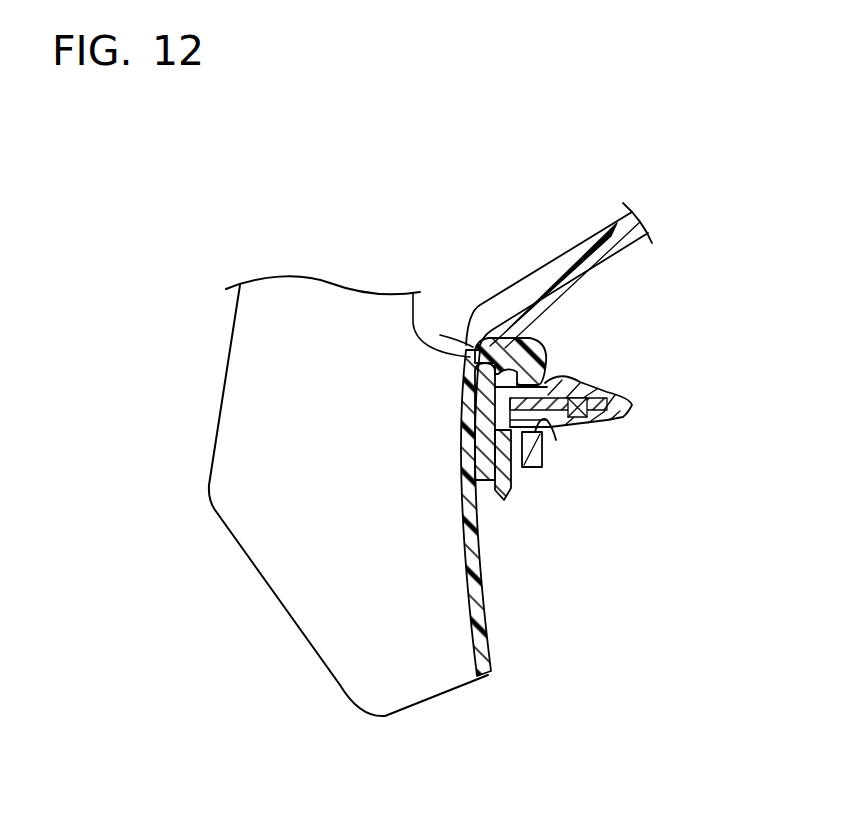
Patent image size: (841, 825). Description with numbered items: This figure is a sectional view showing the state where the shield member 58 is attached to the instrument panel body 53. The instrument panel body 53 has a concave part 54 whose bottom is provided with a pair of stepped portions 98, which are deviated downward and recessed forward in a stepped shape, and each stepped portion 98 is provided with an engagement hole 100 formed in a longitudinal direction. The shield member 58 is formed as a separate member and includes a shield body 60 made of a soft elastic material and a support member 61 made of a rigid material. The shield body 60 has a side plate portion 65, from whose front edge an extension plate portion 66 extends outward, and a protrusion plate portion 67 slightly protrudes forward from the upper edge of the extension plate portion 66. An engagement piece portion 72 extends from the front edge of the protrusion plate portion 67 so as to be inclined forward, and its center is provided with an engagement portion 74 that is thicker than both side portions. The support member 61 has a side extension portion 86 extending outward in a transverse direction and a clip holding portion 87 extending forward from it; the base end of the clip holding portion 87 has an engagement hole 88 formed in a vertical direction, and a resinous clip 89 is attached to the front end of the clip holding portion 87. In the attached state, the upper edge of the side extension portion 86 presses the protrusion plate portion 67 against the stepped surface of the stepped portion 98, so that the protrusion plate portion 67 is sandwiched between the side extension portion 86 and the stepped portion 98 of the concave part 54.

The instrument panel body 53 is at (597, 218).
The concave part 54 is at (470, 336).
The shield member 58 is at (318, 248).
The shield body 60 is at (222, 374).
The support member 61 is at (481, 476).
The side plate portion 65 is at (293, 593).
The extension plate portion 66 is at (483, 611).
The protrusion plate portion 67 is at (484, 348).
The engagement piece portion 72 is at (497, 497).
The engagement portion 74 is at (557, 400).
The side extension portion 86 is at (462, 402).
The clip holding portion 87 is at (598, 395).
The engagement hole 88 is at (448, 426).
The resinous clip 89 is at (560, 437).
The stepped portion 98 is at (509, 357).
The engagement hole 100 is at (555, 437).